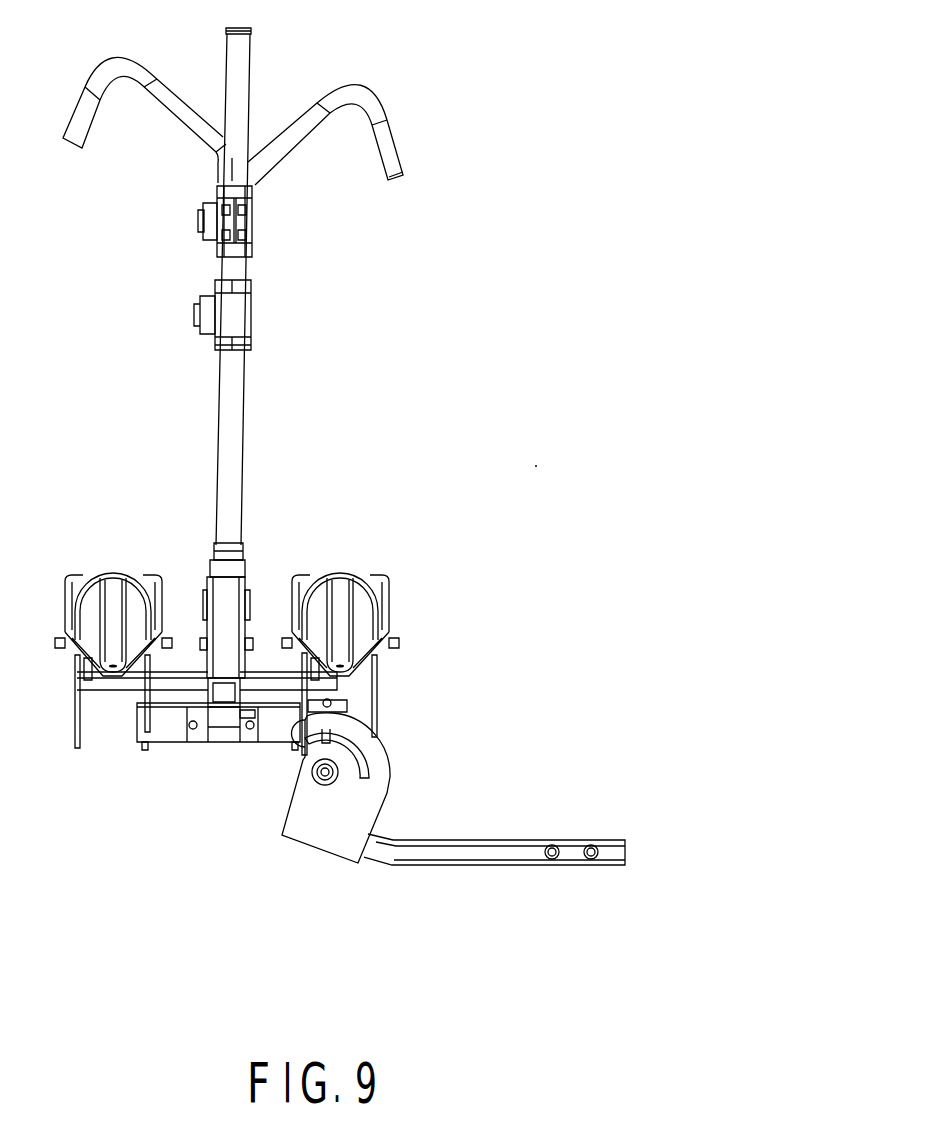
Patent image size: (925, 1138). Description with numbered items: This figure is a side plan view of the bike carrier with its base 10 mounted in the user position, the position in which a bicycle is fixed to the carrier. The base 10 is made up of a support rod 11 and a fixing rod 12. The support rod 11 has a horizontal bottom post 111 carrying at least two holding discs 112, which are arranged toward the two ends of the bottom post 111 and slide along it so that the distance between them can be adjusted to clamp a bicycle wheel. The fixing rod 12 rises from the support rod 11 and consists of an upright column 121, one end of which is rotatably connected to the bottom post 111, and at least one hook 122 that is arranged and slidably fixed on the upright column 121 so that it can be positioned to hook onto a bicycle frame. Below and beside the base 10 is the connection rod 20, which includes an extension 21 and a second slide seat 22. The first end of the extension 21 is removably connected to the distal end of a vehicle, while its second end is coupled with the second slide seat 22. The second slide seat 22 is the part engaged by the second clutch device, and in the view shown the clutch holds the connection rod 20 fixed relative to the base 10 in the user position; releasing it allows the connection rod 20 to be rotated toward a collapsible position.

The base 10 is at (121, 454).
The support rod 11 is at (122, 762).
The bottom post 111 is at (224, 694).
The holding discs 112 is at (78, 580).
The fixing rod 12 is at (403, 110).
The upright column 121 is at (232, 459).
The hook 122 is at (405, 148).
The connection rod 20 is at (437, 908).
The extension 21 is at (497, 855).
The second slide seat 22 is at (328, 827).